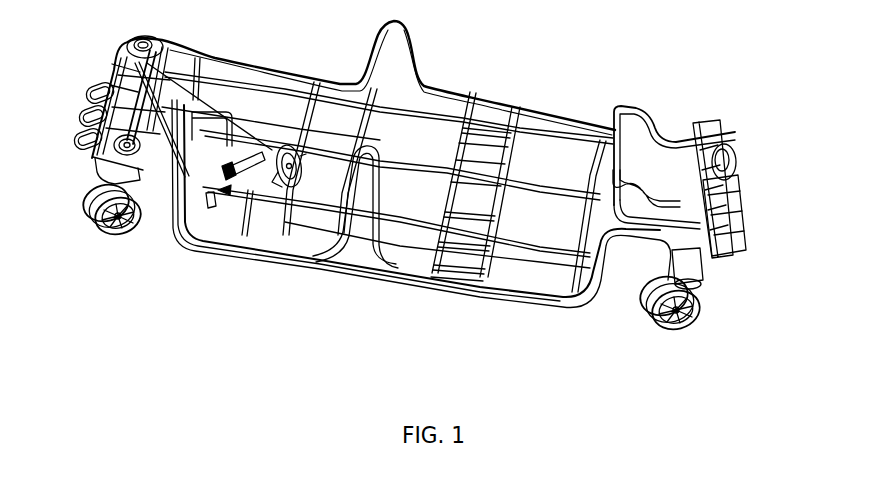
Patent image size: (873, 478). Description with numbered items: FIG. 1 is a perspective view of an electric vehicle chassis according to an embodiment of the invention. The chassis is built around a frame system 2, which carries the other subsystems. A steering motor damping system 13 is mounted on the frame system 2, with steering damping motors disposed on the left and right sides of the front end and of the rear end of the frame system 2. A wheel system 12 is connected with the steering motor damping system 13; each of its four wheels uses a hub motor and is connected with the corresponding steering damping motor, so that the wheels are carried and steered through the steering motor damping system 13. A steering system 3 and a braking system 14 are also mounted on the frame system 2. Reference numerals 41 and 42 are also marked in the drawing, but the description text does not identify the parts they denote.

The frame system 2 is at (450, 295).
The steering system 3 is at (293, 192).
The wheel system 12 is at (128, 243).
The steering motor damping system 13 is at (96, 177).
The braking system 14 is at (214, 207).
The spring coils 41 is at (83, 97).
The mounting plate 42 is at (728, 212).